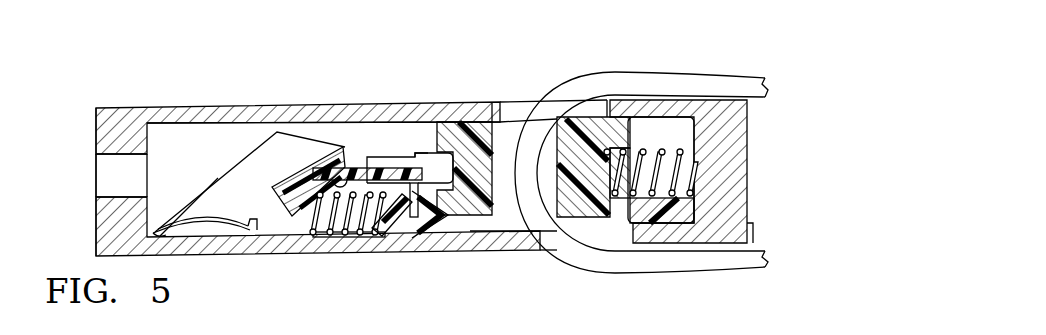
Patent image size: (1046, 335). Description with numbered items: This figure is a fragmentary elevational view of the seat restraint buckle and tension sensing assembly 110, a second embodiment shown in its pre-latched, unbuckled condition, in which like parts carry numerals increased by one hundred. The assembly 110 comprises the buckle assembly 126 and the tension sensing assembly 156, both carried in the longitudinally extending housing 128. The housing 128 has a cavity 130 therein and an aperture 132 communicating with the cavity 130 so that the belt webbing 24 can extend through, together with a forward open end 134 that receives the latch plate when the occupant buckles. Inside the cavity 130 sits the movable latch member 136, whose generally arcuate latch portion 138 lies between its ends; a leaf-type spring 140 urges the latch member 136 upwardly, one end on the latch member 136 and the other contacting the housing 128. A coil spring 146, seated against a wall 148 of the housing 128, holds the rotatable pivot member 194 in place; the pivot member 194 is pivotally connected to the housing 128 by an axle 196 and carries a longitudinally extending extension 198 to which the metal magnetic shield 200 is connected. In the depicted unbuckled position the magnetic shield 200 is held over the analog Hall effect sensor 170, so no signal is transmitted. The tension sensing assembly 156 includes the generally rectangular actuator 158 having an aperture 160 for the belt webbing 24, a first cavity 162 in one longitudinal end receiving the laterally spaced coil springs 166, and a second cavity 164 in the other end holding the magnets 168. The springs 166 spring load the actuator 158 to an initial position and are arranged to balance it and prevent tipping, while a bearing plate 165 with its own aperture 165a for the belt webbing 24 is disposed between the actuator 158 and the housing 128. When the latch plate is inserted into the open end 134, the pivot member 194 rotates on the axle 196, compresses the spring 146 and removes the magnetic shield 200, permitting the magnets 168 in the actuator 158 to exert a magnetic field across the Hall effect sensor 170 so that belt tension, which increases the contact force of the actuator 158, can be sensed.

The belt webbing 24 is at (707, 82).
The seat restraint buckle and tension sensing assembly 110 is at (87, 97).
The buckle assembly 126 is at (158, 106).
The housing 128 is at (302, 110).
The cavity 130 is at (325, 126).
The aperture 132 is at (610, 117).
The open end 134 is at (113, 155).
The latch member 136 is at (180, 207).
The latch portion 138 is at (220, 175).
The spring 140 is at (212, 220).
The spring 146 is at (317, 221).
The wall 148 is at (405, 200).
The tension sensing assembly 156 is at (630, 123).
The actuator 158 is at (518, 222).
The aperture 160 is at (494, 135).
The first cavity 162 is at (612, 195).
The second cavity 164 is at (458, 195).
The bearing plate 165 is at (680, 217).
The aperture 165a is at (505, 222).
The springs 166 is at (670, 173).
The magnets 168 is at (410, 228).
The Hall effect sensor 170 is at (388, 194).
The pivot member 194 is at (287, 182).
The axle 196 is at (342, 165).
The extension 198 is at (383, 168).
The magnetic shield 200 is at (398, 158).